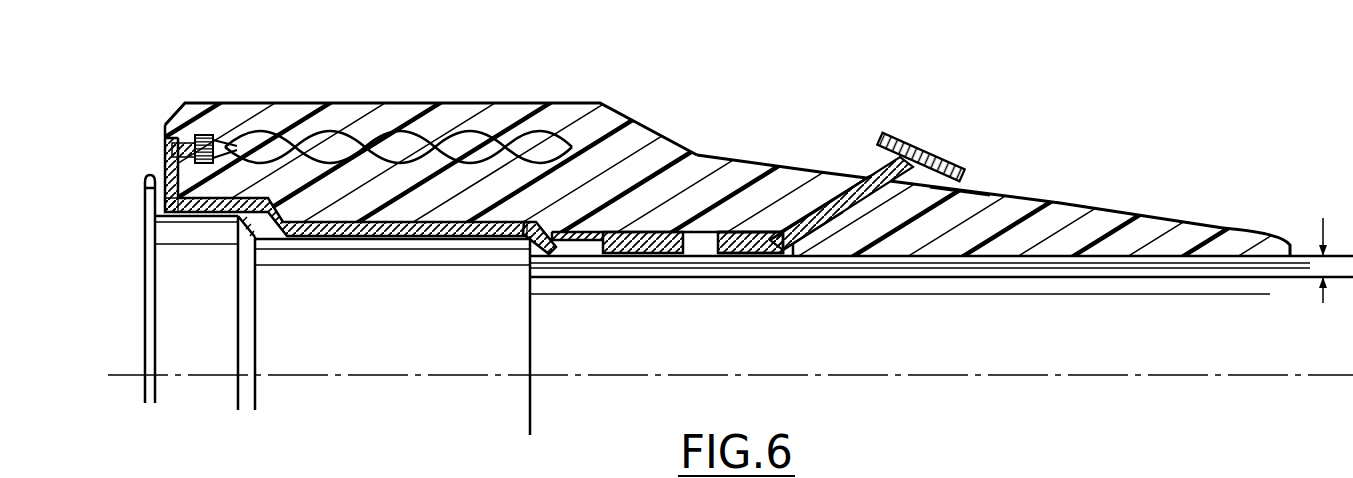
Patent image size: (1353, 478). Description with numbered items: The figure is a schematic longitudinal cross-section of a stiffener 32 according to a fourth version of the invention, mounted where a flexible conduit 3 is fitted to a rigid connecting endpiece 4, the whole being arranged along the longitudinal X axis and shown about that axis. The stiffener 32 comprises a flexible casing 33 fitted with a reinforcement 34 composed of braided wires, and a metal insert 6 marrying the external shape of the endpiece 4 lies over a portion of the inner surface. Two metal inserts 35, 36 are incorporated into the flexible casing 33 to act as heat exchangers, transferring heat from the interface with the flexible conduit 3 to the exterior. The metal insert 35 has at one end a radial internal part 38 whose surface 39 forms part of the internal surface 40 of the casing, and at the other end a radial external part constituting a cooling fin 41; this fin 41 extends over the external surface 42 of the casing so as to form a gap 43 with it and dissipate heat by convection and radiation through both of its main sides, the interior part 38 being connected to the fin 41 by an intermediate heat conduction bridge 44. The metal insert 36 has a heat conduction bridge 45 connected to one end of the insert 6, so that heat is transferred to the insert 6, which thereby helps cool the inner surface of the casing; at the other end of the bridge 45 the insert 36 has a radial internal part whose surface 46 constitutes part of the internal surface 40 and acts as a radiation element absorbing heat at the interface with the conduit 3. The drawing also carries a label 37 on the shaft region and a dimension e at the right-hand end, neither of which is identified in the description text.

The flexible conduit 3 is at (1049, 266).
The rigid connecting endpiece 4 is at (178, 320).
The metal insert 6 is at (349, 233).
The stiffener 32 is at (589, 134).
The flexible casing 33 is at (657, 157).
The reinforcement 34 is at (364, 136).
The metal insert 35 is at (828, 207).
The metal insert 36 is at (638, 250).
The shaft surface 37 is at (1122, 254).
The radial internal part 38 is at (761, 248).
The surface 39 is at (725, 255).
The internal surface 40 is at (1232, 246).
The cooling fin 41 is at (901, 135).
The external surface 42 is at (847, 175).
The gap 43 is at (953, 190).
The heat conduction bridge 44 is at (820, 215).
The heat conduction bridge 45 is at (571, 245).
The surface 46 is at (611, 252).
The longitudinal X axis X is at (323, 378).
The thickness e is at (1333, 256).